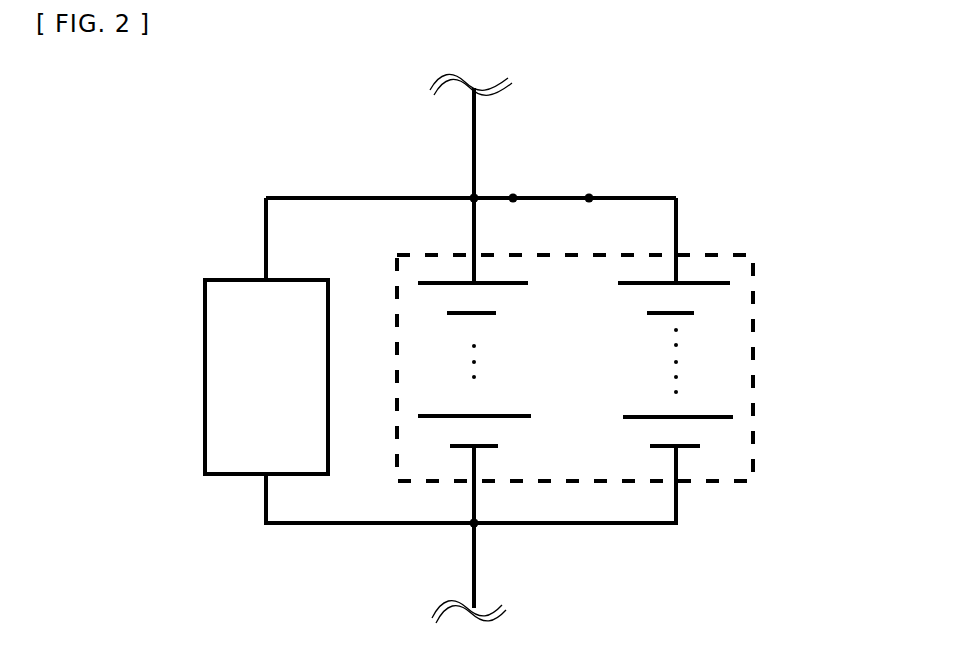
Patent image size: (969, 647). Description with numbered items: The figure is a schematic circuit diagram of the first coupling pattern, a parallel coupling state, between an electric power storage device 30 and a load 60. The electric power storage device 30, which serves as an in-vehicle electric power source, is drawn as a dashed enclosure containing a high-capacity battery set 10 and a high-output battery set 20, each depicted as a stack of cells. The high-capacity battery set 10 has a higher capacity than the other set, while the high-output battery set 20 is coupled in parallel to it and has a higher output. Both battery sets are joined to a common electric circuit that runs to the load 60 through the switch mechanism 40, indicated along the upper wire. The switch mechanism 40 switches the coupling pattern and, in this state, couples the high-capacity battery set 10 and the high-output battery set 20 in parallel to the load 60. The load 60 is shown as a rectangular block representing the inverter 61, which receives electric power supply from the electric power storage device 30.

The high-capacity battery set 10 is at (727, 335).
The high-output battery set 20 is at (552, 450).
The electric power storage device 30 is at (759, 427).
The switch mechanism 40 is at (533, 172).
The load 60 is at (197, 361).
The inverter 61 is at (197, 307).